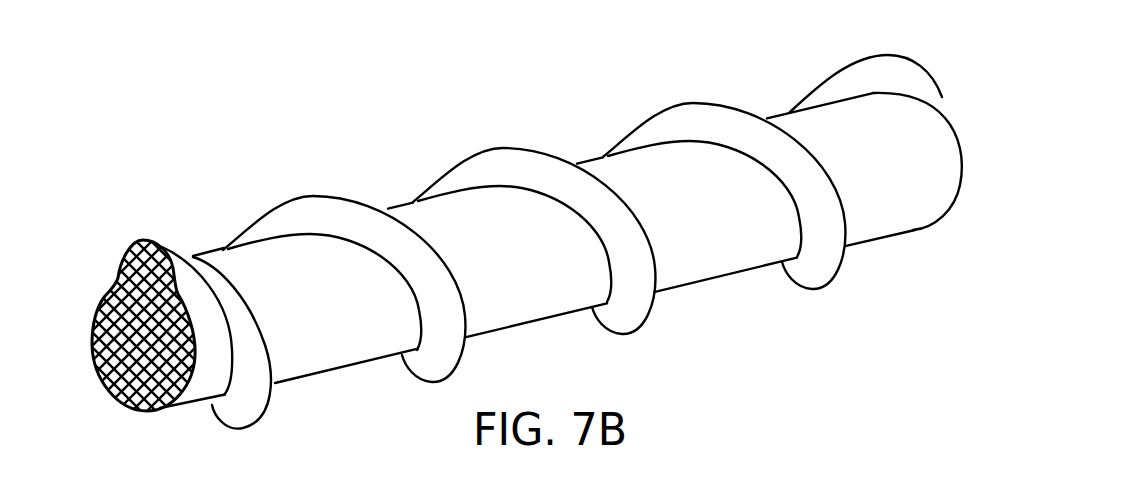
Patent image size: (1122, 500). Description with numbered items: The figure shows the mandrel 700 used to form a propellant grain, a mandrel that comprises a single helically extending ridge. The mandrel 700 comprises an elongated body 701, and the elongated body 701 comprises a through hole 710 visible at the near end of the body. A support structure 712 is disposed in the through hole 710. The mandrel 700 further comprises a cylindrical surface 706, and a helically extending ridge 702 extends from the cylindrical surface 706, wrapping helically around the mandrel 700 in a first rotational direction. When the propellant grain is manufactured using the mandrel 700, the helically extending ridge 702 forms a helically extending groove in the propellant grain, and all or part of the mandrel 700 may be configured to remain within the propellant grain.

The mandrel 700 is at (275, 124).
The elongated body 701 is at (711, 52).
The helically extending ridge 702 is at (262, 224).
The cylindrical surface 706 is at (462, 220).
The through hole 710 is at (93, 318).
The support structure 712 is at (123, 388).